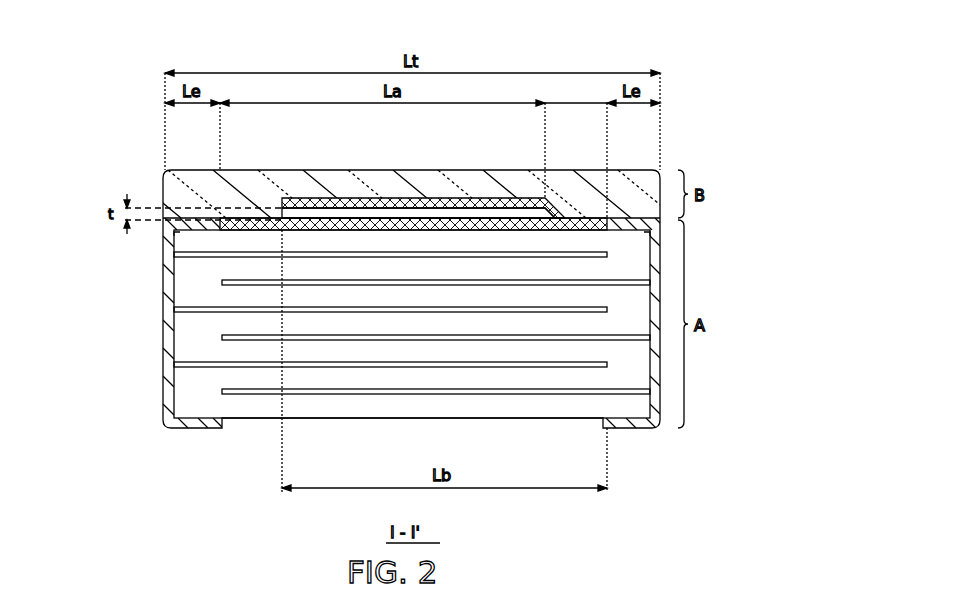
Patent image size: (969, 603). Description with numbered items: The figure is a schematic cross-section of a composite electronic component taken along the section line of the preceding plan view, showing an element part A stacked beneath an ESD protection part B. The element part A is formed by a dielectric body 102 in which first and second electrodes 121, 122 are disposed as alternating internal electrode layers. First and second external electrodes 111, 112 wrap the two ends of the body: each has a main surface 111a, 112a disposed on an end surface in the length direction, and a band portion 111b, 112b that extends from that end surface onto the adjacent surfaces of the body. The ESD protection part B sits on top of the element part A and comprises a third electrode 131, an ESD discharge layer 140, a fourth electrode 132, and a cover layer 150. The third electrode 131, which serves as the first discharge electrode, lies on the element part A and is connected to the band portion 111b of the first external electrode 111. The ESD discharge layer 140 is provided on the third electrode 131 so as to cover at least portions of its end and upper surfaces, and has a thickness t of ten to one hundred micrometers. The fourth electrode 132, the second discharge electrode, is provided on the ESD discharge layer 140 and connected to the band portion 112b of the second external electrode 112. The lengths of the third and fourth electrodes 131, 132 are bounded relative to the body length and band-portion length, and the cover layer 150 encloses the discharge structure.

The dielectric body 102 is at (372, 377).
The first external electrode 111 is at (125, 330).
The main surface of first external electrode 111a is at (170, 300).
The band portion of first external electrode 111b is at (185, 233).
The second external electrode 112 is at (701, 330).
The main surface of second external electrode 112a is at (657, 302).
The band portion of second external electrode 112b is at (632, 233).
The first electrode 121 is at (243, 366).
The second electrode 122 is at (319, 395).
The third electrode 131 is at (262, 225).
The fourth electrode 132 is at (478, 203).
The ESD discharge layer 140 is at (388, 214).
The cover layer 150 is at (578, 188).